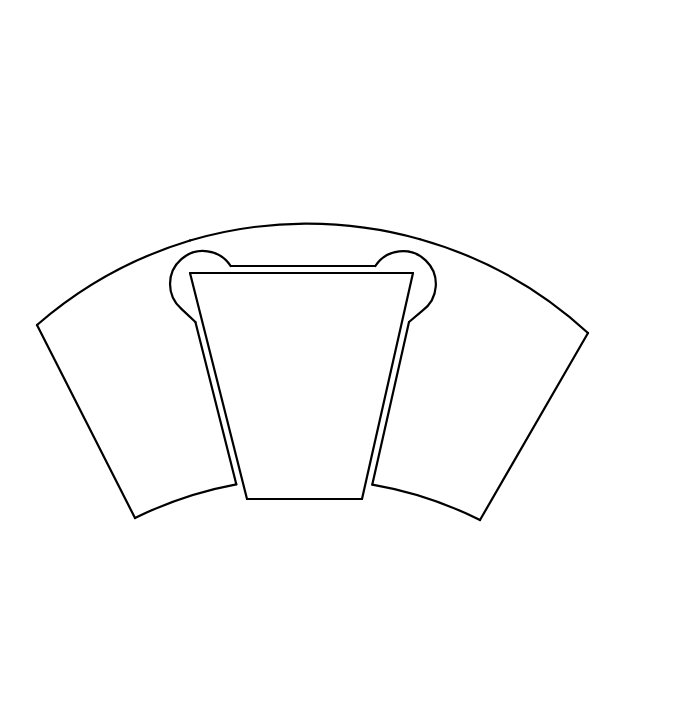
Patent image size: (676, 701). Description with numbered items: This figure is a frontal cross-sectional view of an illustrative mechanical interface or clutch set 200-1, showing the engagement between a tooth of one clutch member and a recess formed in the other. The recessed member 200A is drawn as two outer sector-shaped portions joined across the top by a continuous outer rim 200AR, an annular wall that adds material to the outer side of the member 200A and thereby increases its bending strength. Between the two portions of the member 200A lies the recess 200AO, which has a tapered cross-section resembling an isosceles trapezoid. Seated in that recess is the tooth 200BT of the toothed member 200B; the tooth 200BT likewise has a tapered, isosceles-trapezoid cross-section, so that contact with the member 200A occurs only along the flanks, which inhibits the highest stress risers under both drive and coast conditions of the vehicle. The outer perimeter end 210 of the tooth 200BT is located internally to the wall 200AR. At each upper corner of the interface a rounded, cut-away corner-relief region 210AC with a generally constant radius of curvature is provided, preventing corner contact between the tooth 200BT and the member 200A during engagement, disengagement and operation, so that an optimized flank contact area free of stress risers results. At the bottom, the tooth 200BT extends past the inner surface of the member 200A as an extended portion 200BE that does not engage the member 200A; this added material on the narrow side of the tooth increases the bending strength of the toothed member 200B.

The clutch set 200-1 is at (88, 138).
The clutch member 200A is at (545, 292).
The continuous outer rim 200AR is at (313, 212).
The recess 200AO is at (230, 498).
The outer perimeter end 210 is at (285, 273).
The corner-relief region 210AC is at (172, 278).
The toothed clutch member 200B is at (322, 478).
The tooth 200BT is at (260, 403).
The extended portion 200BE is at (247, 500).